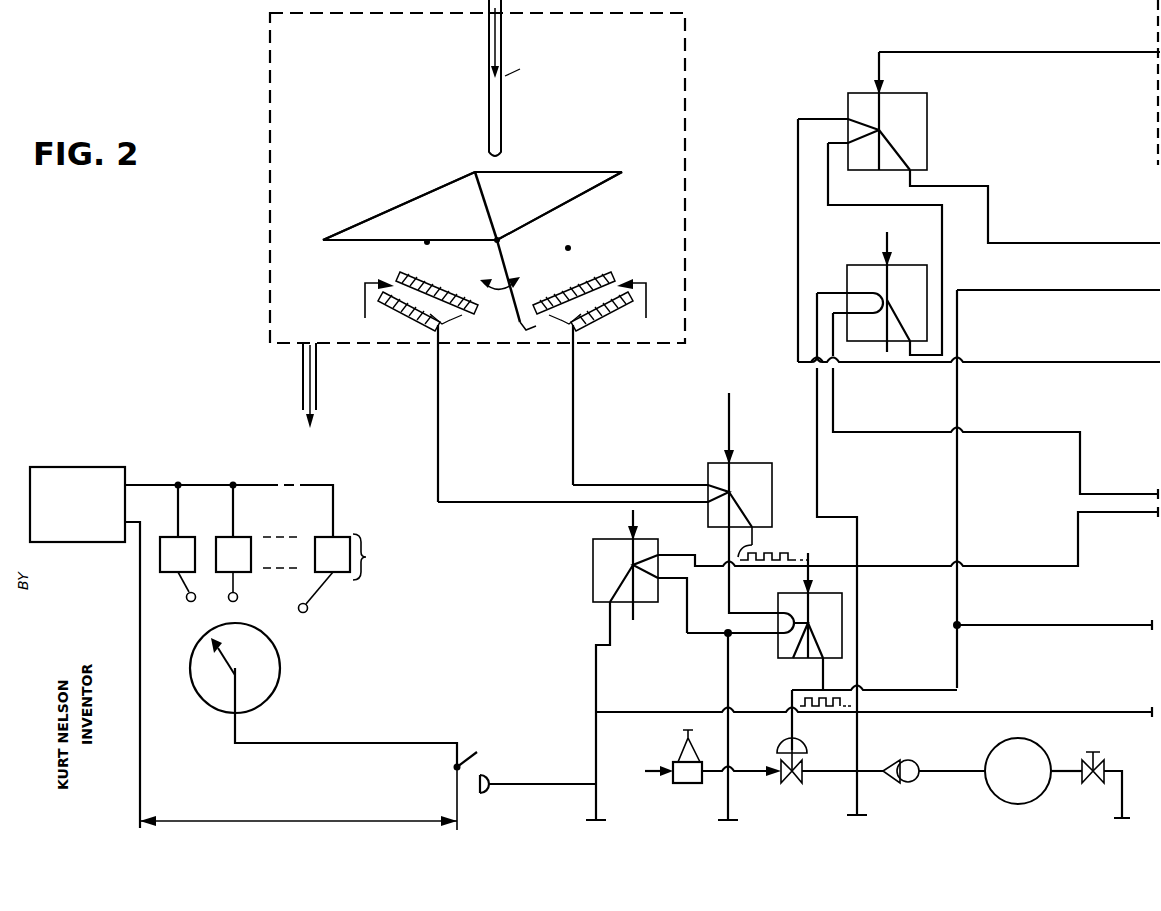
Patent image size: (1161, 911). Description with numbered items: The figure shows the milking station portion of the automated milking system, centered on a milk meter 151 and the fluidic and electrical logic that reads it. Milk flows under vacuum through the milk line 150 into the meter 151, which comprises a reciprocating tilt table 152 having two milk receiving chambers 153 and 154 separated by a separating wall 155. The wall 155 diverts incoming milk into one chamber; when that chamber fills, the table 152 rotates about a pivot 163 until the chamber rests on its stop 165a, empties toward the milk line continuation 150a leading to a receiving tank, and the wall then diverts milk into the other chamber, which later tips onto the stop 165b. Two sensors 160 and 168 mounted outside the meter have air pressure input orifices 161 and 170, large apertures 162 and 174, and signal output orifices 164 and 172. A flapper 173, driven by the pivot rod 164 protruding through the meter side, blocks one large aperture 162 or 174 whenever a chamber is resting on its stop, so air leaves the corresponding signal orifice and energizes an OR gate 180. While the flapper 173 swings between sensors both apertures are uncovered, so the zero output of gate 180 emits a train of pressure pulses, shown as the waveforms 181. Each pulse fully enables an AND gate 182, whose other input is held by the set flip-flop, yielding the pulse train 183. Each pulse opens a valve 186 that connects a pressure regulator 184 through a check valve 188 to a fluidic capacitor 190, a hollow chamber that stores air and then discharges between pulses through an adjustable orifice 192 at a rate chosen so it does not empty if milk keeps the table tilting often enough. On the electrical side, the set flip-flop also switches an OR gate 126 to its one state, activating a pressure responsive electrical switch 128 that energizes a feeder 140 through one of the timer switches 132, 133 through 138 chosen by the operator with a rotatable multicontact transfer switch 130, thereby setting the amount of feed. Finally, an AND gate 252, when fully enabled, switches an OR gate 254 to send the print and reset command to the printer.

The OR gate 126 is at (593, 565).
The pressure responsive electrical switch 128 is at (470, 768).
The rotatable multicontact transfer switch 130 is at (280, 661).
The timer switch 132 is at (176, 530).
The timer switch 133 is at (232, 530).
The timer switch 138 is at (333, 532).
The feeder 140 is at (128, 480).
The milk line 150 is at (503, 130).
The milk line continuation 150a is at (302, 372).
The milk meter 151 is at (477, 178).
The reciprocating tilt table 152 is at (626, 165).
The milk receiving chamber 153 is at (558, 180).
The milk receiving chamber 154 is at (432, 208).
The separating wall 155 is at (488, 206).
The sensor 160 is at (447, 290).
The air pressure input orifice 161 is at (403, 277).
The large aperture 162 is at (474, 312).
The pivot 163 is at (505, 242).
The signal output orifice 164 is at (506, 263).
The stop 165a is at (571, 248).
The stop 165b is at (427, 240).
The sensor 168 is at (590, 276).
The air pressure input orifice 170 is at (640, 291).
The signal output orifice 172 is at (586, 315).
The flapper 173 is at (517, 284).
The large aperture 174 is at (527, 320).
The OR gate 180 is at (608, 491).
The pressure pulse waveforms 181 is at (780, 556).
The AND gate 182 is at (815, 598).
The pulse train 183 is at (790, 692).
The pressure regulator 184 is at (696, 745).
The valve 186 is at (806, 760).
The check valve 188 is at (916, 764).
The fluidic capacitor 190 is at (1008, 803).
The adjustable orifice 192 is at (1108, 768).
The AND gate 252 is at (979, 467).
The OR gate 254 is at (964, 148).